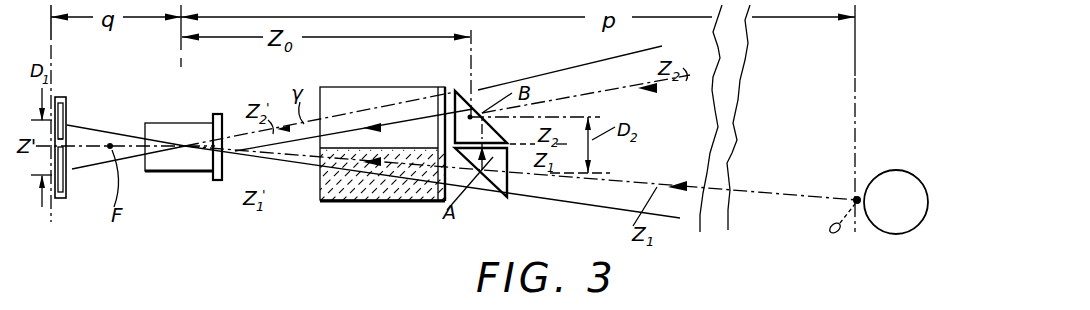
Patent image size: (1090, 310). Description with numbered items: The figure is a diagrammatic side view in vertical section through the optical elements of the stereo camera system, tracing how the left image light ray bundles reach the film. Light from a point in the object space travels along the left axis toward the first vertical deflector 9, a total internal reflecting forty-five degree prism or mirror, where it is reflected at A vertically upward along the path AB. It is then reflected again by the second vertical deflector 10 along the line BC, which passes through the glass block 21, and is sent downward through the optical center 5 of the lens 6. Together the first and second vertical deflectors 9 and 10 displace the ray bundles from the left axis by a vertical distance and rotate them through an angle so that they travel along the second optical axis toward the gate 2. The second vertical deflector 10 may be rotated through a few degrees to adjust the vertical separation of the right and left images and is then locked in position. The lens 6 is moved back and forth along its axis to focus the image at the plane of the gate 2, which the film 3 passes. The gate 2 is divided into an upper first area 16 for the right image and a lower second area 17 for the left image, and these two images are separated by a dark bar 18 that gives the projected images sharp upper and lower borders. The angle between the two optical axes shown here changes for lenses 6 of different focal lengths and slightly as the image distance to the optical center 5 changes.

The gate 2 is at (66, 100).
The film 3 is at (55, 87).
The optical center 5 is at (183, 144).
The lens 6 is at (181, 174).
The first vertical deflector 9 is at (495, 187).
The second vertical deflector 10 is at (473, 95).
The first area 16 is at (68, 112).
The second area 17 is at (67, 181).
The dark bar 18 is at (74, 124).
The block 21 is at (382, 90).